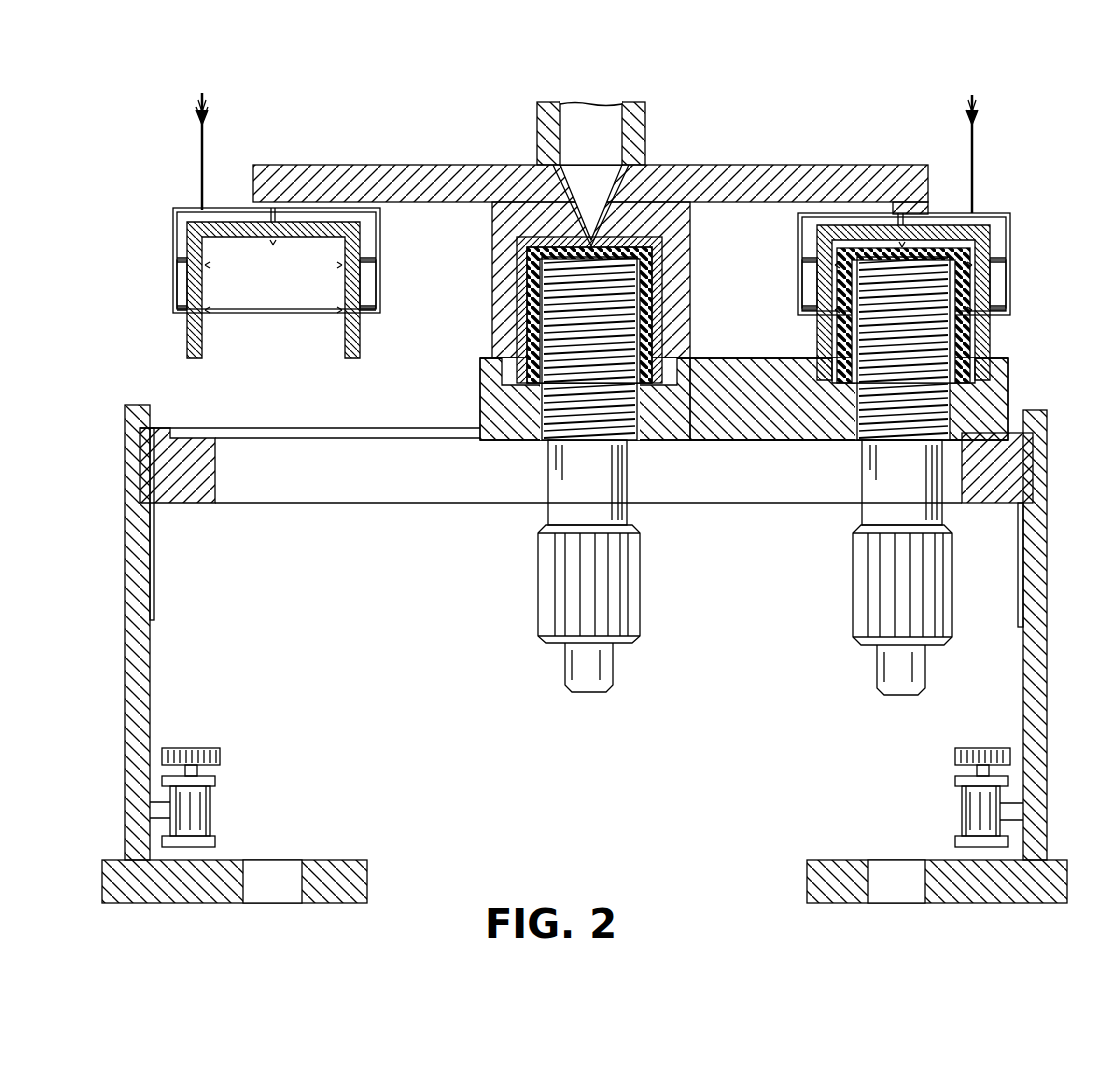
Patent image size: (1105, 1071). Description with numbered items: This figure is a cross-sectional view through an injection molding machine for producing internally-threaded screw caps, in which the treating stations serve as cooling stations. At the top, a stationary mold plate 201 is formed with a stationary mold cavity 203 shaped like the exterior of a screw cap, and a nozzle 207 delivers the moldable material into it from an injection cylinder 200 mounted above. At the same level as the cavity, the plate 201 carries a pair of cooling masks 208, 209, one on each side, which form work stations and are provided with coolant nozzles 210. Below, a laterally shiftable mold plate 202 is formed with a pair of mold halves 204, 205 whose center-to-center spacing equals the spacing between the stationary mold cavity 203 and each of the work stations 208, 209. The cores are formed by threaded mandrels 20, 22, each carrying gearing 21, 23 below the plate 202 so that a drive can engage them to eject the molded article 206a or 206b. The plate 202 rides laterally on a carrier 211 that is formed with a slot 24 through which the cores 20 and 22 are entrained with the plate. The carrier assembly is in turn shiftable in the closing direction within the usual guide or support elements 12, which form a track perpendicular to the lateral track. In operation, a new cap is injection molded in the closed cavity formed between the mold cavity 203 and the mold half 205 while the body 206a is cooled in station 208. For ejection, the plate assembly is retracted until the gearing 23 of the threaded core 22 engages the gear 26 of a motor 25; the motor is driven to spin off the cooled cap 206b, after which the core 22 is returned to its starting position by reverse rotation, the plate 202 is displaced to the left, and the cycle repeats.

The guide or support elements 12 is at (130, 628).
The threaded mandrel 20 is at (620, 470).
The gearing 21 is at (635, 620).
The threaded mandrel 22 is at (870, 470).
The gearing 23 is at (855, 605).
The slot 24 is at (408, 488).
The motor 25 is at (205, 808).
The gear 26 is at (190, 748).
The injection cylinder 200 is at (647, 120).
The stationary mold plate 201 is at (347, 165).
The mold plate 202 is at (741, 417).
The stationary mold cavity 203 is at (665, 243).
The mold half 204 is at (492, 388).
The mold half 205 is at (1005, 377).
The molded article 206a is at (528, 242).
The cooled cap 206b is at (880, 250).
The nozzle 207 is at (612, 205).
The cooling mask 208 is at (235, 225).
The cooling mask 209 is at (985, 225).
The coolant nozzles 210 is at (205, 305).
The carrier 211 is at (160, 470).